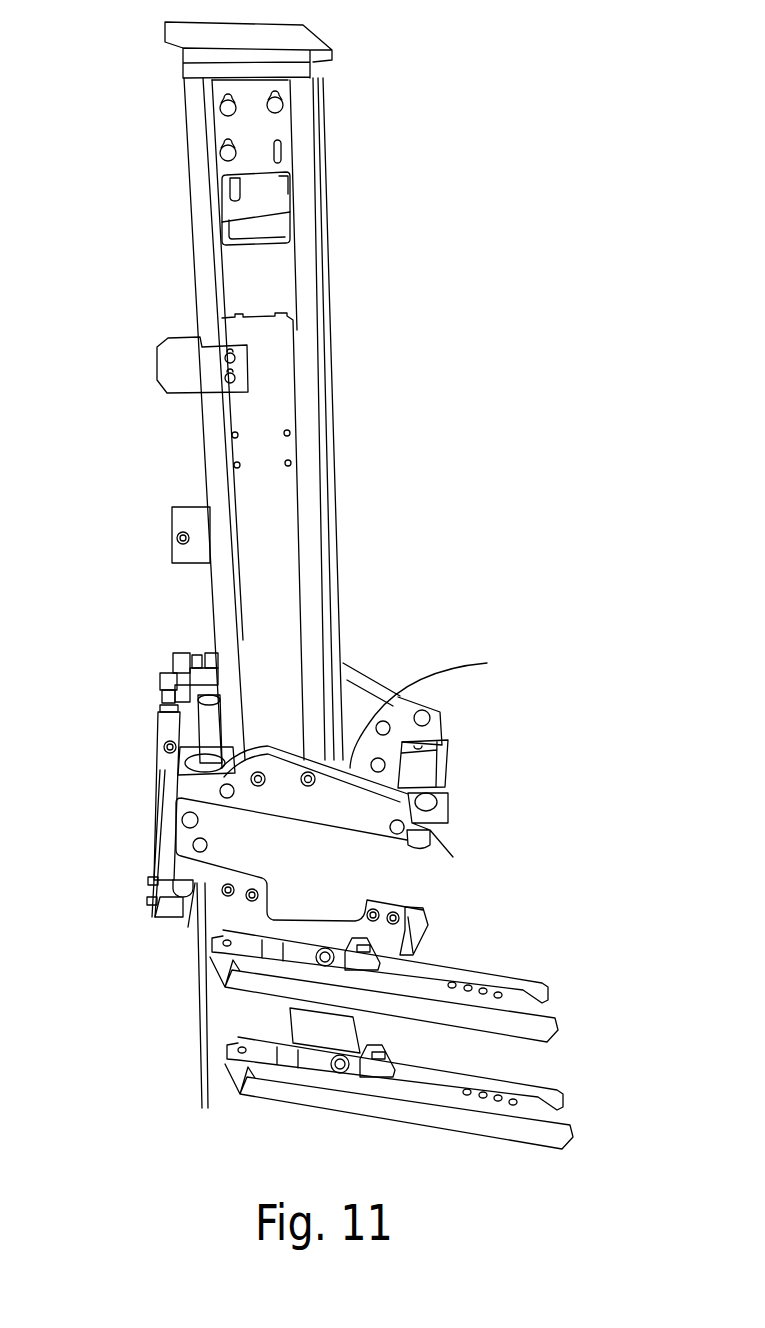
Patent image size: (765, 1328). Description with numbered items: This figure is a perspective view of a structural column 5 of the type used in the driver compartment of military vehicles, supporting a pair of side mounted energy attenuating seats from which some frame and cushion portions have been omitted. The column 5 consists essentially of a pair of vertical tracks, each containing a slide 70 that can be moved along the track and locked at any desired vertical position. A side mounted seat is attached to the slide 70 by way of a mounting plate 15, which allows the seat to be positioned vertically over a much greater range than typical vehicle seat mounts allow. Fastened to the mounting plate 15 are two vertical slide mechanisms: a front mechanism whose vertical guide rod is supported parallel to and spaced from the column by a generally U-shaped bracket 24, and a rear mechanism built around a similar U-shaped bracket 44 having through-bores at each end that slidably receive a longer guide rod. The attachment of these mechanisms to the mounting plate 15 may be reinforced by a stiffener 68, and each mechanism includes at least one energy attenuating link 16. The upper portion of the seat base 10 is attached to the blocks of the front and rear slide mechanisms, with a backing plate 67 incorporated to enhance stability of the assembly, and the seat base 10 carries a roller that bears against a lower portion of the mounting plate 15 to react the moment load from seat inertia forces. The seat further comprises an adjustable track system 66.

The structural column 5 is at (315, 415).
The seat base 10 is at (220, 1018).
The mounting plate 15 is at (373, 685).
The energy attenuating link 16 is at (455, 785).
The U-shaped bracket 24 is at (450, 803).
The U-shaped bracket 44 is at (160, 763).
The adjustable track system 66 is at (517, 1093).
The backing plate 67 is at (428, 906).
The stiffener 68 is at (192, 848).
The slide 70 is at (255, 583).